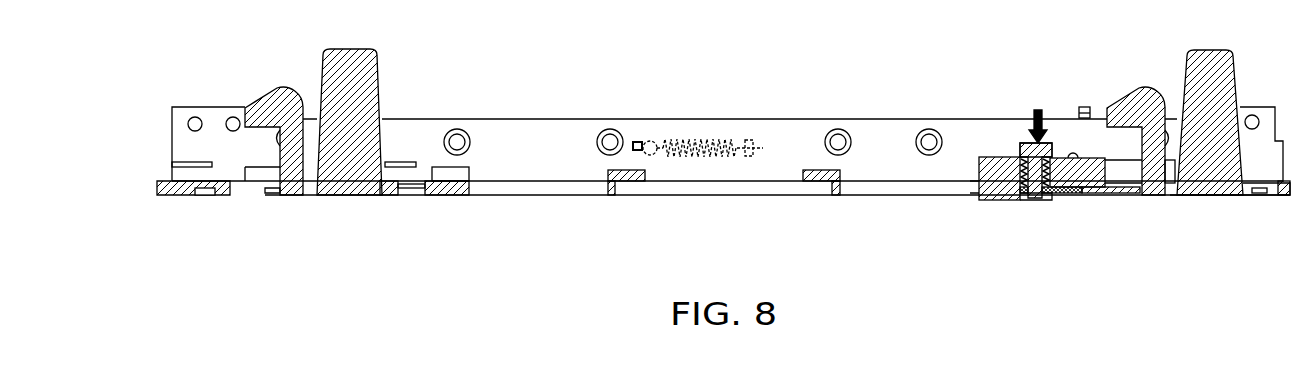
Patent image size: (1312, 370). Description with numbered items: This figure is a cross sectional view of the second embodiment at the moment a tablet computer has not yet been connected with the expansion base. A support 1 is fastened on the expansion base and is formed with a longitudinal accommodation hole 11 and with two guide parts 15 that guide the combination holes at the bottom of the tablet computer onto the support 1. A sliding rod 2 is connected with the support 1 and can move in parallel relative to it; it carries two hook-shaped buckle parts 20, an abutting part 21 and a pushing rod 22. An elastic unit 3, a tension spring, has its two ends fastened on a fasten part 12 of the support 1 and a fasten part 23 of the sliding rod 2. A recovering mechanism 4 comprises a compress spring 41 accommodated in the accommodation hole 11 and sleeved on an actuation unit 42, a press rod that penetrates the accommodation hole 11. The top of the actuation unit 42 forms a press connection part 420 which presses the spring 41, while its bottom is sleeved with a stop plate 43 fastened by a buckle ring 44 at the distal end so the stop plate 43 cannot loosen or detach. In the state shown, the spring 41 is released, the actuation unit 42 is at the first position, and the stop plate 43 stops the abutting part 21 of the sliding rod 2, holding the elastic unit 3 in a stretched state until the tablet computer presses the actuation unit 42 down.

The support 1 is at (543, 138).
The sliding rod 2 is at (1153, 193).
The elastic unit 3 is at (697, 140).
The recovering mechanism 4 is at (1010, 196).
The accommodation hole 11 is at (978, 203).
The fasten part 12 is at (638, 133).
The guide part 15 is at (346, 67).
The buckle part 20 is at (265, 100).
The abutting part 21 is at (1110, 193).
The pushing rod 22 is at (1081, 107).
The fasten part 23 is at (750, 140).
The spring 41 is at (1022, 173).
The actuation unit 42 is at (1009, 166).
The stop plate 43 is at (1067, 192).
The buckle ring 44 is at (1047, 190).
The press connection part 420 is at (1028, 170).